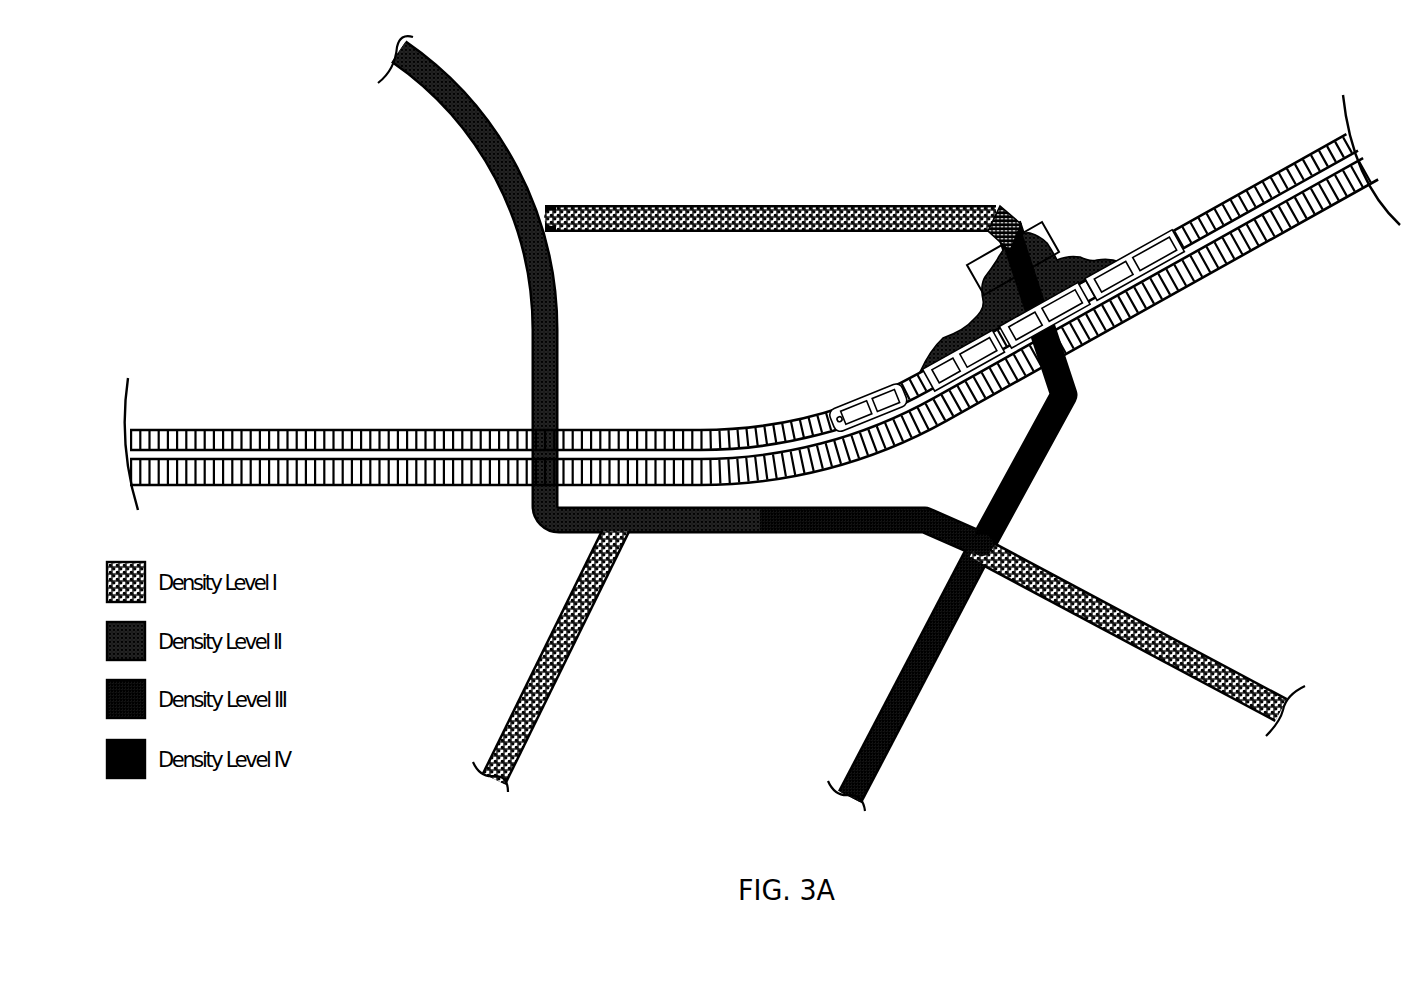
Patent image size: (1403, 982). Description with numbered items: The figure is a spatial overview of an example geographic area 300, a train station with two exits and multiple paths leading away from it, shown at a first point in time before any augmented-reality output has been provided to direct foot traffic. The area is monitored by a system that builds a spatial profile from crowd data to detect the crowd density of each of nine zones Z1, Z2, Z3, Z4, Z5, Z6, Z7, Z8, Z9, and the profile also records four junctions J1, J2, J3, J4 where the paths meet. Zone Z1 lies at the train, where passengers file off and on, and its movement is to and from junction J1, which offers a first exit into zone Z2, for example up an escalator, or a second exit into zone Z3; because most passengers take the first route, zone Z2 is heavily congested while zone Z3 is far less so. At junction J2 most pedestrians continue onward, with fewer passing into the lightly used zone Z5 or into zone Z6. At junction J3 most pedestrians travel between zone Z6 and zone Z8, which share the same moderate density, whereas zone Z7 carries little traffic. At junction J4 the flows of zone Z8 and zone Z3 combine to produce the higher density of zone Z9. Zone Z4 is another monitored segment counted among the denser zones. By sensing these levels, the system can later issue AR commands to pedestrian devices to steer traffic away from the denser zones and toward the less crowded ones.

The geographic area 300 is at (762, 423).
The zone Z1 is at (975, 290).
The zone Z2 is at (1049, 450).
The zone Z3 is at (808, 208).
The zone Z4 is at (892, 690).
The zone Z5 is at (1165, 632).
The zone Z6 is at (758, 533).
The zone Z7 is at (545, 650).
The zone Z8 is at (530, 370).
The zone Z9 is at (507, 188).
The junction J1 is at (1020, 238).
The junction J2 is at (1006, 537).
The junction J3 is at (638, 540).
The junction J4 is at (560, 182).